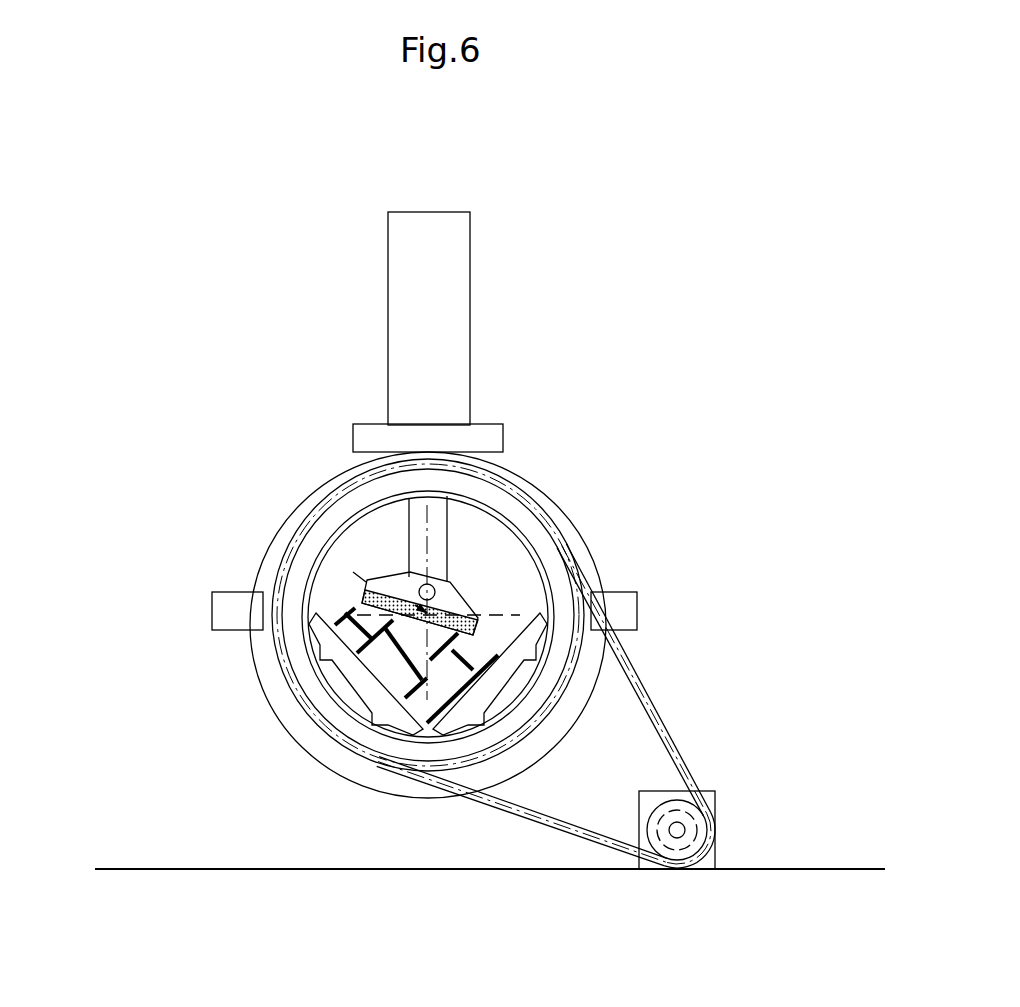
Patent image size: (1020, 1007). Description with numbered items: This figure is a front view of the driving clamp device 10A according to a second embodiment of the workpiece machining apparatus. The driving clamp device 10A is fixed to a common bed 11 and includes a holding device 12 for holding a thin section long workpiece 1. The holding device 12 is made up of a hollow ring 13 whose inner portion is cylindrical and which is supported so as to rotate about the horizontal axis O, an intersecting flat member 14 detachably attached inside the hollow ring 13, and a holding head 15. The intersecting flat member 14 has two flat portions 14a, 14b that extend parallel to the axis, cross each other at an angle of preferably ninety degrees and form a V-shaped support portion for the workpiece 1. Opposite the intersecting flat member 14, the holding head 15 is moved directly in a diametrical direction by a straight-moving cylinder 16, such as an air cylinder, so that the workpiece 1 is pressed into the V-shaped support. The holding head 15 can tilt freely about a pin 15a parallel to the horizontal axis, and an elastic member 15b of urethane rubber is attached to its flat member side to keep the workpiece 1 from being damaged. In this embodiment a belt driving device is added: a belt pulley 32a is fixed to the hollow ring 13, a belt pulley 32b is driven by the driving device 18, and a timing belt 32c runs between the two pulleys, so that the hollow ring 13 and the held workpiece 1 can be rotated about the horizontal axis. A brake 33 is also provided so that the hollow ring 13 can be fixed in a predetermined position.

The driving clamp device 10A is at (222, 405).
The bed 11 is at (135, 866).
The holding device 12 is at (488, 381).
The hollow ring 13 is at (468, 522).
The intersecting flat member 14 is at (437, 630).
The flat portion 14a is at (329, 613).
The flat portion 14b is at (526, 622).
The holding head 15 is at (433, 581).
The pin 15a is at (421, 587).
The elastic member 15b is at (483, 603).
The straight-moving cylinder 16 is at (400, 298).
The driving device 18 is at (726, 800).
The belt pulley 32a is at (306, 540).
The belt pulley 32b is at (698, 833).
The timing belt 32c is at (662, 718).
The brake 33 is at (237, 617).
The thin section long workpiece 1 is at (401, 668).